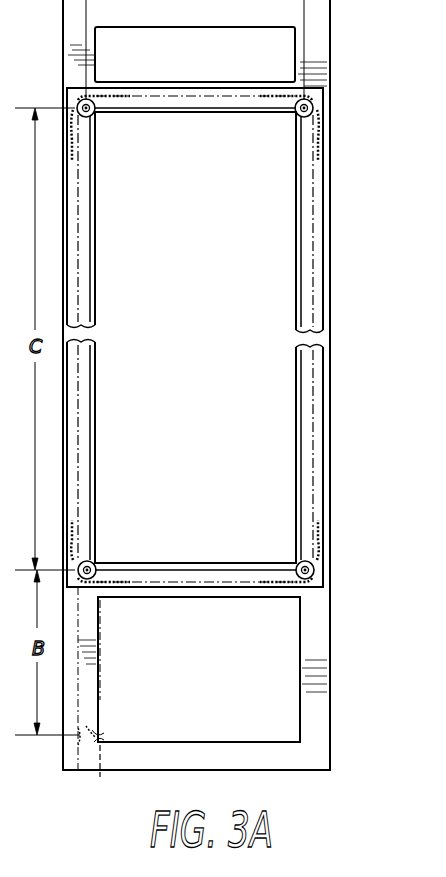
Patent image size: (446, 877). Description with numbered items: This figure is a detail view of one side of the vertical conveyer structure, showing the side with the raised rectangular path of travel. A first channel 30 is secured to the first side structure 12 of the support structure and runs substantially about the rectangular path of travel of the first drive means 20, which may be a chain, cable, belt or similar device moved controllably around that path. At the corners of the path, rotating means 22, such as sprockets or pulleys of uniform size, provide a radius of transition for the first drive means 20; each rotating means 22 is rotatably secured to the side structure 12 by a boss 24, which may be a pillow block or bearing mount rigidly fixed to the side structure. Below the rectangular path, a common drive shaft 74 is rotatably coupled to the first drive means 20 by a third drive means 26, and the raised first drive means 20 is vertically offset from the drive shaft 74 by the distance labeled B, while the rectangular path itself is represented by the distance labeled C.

The first side structure 12 is at (327, 68).
The first drive means 20 is at (320, 132).
The rotating means 22 is at (92, 125).
The boss 24 is at (97, 116).
The third drive means 26 is at (82, 636).
The first channel 30 is at (240, 88).
The drive shaft 74 is at (112, 777).